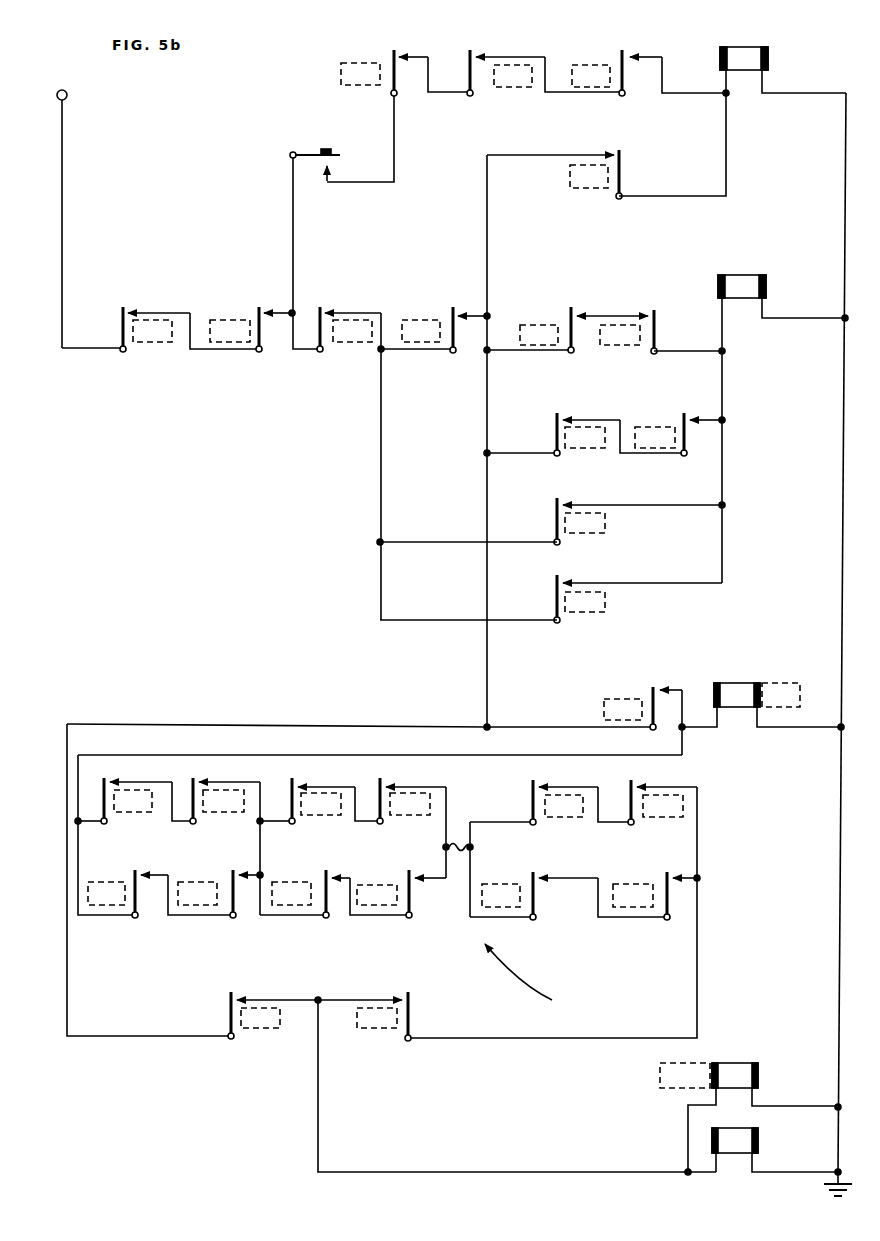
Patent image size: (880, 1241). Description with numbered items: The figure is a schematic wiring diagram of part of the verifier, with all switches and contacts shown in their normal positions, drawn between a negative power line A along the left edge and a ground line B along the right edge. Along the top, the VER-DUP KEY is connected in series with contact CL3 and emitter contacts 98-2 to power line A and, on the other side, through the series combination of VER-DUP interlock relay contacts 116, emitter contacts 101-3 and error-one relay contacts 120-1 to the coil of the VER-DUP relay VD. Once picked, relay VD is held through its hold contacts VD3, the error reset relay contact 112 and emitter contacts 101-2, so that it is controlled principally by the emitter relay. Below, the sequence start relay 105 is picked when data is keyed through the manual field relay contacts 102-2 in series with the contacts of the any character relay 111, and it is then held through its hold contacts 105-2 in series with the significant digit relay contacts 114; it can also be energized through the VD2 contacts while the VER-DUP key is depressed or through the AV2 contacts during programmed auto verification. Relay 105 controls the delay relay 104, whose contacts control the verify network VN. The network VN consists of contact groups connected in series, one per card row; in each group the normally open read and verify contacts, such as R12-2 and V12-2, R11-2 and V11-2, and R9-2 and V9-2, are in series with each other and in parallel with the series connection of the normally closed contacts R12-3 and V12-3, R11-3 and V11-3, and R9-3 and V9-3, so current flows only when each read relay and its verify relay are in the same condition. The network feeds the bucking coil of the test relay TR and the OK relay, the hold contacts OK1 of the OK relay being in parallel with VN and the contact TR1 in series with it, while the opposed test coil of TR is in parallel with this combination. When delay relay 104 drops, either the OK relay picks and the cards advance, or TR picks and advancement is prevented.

The negative power line A is at (62, 142).
The ground line B is at (846, 180).
The VER-DUP key VER-DUP KEY is at (338, 132).
The VER-DUP interlock relay contacts 116 is at (398, 54).
The emitter contacts 101-3 is at (482, 55).
The error-1 relay contacts 120-1 is at (632, 55).
The VER-DUP relay VD is at (748, 47).
The hold contacts of VER-DUP relay VD3 is at (615, 150).
The contact CL3 is at (130, 310).
The emitter contacts 98-2 is at (270, 310).
The emitter contacts 101-2 is at (330, 311).
The error reset relay contact 112 is at (418, 320).
The significant digit relay contacts 114 is at (530, 325).
The hold contacts of sequence start relay 105-2 is at (648, 312).
The sequence start relay 105 is at (745, 275).
The contacts of manual field relay 102-2 is at (578, 418).
The any character relay 111 is at (665, 427).
The VD2 contacts VD2 is at (570, 503).
The AV2 contacts AV2 is at (568, 581).
The delay relay 104 is at (640, 698).
The test relay TR is at (733, 683).
The OK relay OK is at (752, 1140).
The verify network VN is at (382, 881).
The normally open read relay contacts R12-2 is at (112, 782).
The normally open verify relay contacts V12-2 is at (202, 782).
The normally open read relay contacts R11-2 is at (303, 787).
The normally open verify relay contacts V11-2 is at (394, 787).
The normally open read relay contacts R9-2 is at (544, 786).
The normally open verify relay contacts V9-2 is at (643, 786).
The normally closed read relay contacts R12-3 is at (145, 873).
The normally closed verify relay contacts V12-3 is at (238, 873).
The normally closed read relay contacts R11-3 is at (335, 876).
The normally closed verify relay contacts V11-3 is at (420, 876).
The normally closed read relay contacts R9-3 is at (545, 876).
The normally closed verify relay contacts V9-3 is at (682, 876).
The hold contacts of OK relay OK1 is at (238, 998).
The test relay contact TR1 is at (398, 998).